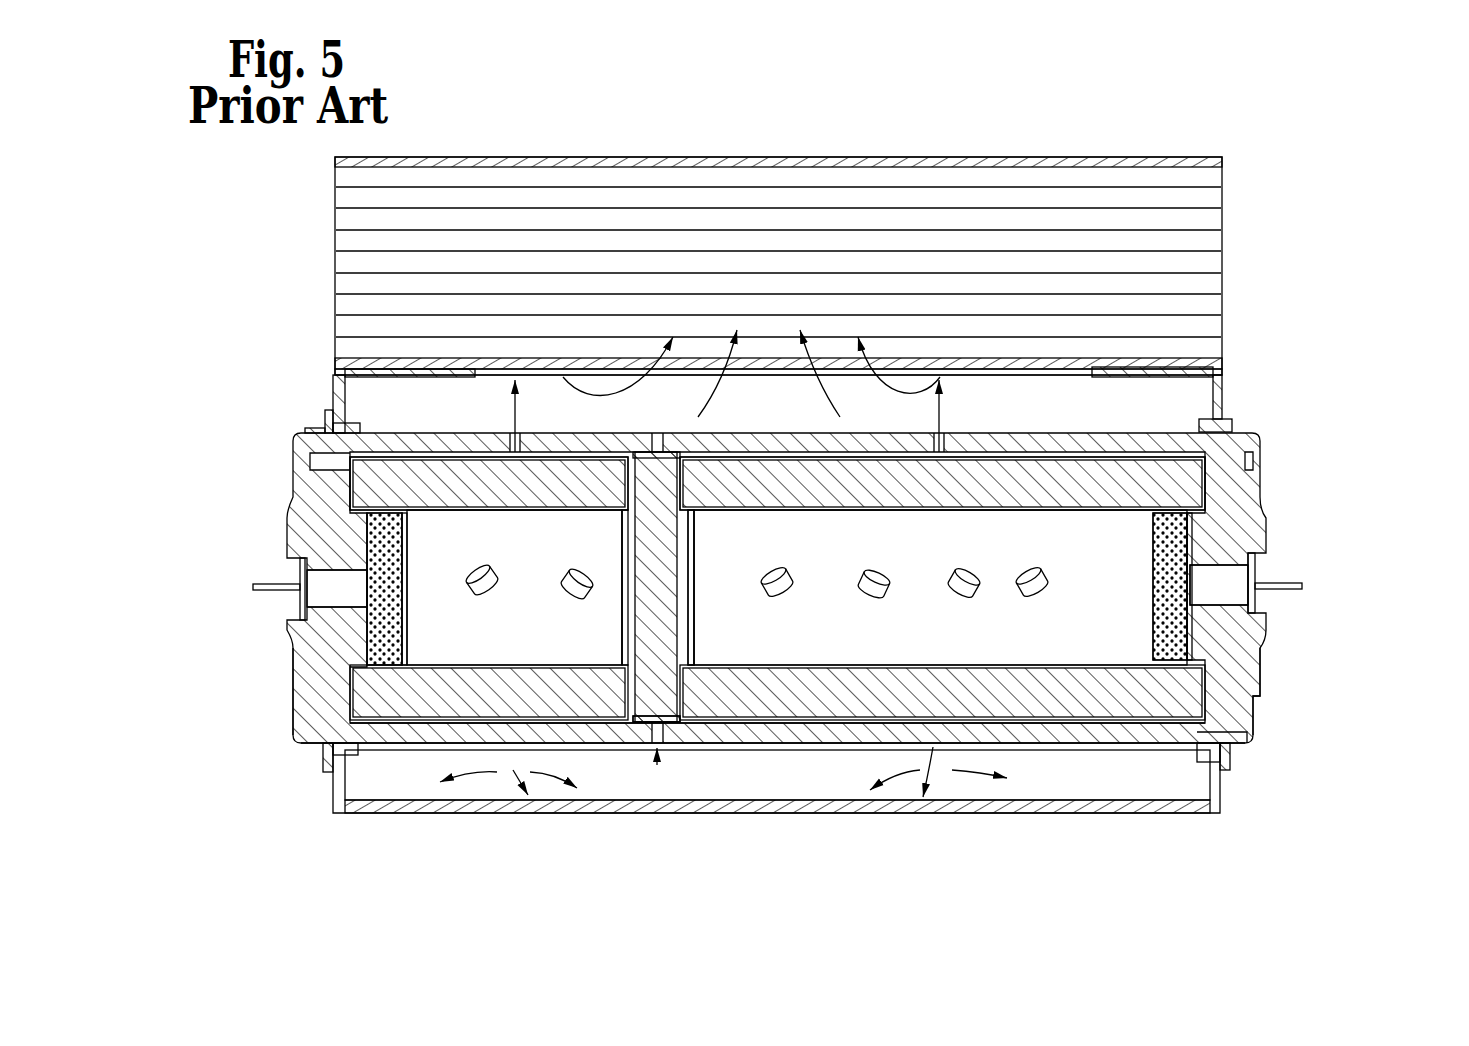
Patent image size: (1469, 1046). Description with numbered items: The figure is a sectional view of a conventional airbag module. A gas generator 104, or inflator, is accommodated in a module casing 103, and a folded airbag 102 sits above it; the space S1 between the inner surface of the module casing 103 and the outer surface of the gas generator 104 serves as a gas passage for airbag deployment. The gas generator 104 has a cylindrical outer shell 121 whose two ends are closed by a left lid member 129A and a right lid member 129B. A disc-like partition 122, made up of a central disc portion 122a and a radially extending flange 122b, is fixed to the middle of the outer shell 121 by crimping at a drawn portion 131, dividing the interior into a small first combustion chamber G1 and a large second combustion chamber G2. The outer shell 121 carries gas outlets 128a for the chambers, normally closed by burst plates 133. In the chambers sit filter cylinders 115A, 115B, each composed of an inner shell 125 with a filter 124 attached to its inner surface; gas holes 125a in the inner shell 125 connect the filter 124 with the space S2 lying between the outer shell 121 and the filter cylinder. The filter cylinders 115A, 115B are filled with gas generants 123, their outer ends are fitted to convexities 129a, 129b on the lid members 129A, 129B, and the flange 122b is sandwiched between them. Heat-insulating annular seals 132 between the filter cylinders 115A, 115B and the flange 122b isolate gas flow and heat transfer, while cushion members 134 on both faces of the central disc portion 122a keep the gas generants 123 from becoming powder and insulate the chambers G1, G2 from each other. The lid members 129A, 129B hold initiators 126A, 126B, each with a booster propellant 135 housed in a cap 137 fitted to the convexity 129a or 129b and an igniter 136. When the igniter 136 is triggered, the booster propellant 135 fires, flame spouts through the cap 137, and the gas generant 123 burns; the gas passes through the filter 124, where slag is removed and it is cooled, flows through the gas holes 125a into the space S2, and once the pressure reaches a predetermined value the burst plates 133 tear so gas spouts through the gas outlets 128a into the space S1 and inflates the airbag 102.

The airbag 102 is at (976, 230).
The module casing 103 is at (1226, 782).
The gas generator 104 is at (290, 449).
The filter cylinder 115A is at (194, 495).
The filter cylinder 115B is at (1373, 505).
The outer shell 121 is at (823, 750).
The partition 122 is at (630, 870).
The central disc portion 122a is at (633, 620).
The flange 122b is at (640, 722).
The gas generant 123 is at (568, 595).
The filter 124 is at (352, 498).
The inner shell 125 is at (350, 487).
The gas holes 125a is at (452, 660).
The initiator 126A is at (194, 698).
The initiator 126B is at (1373, 636).
The gas outlets 128a is at (510, 432).
The lid member 129A is at (307, 682).
The convexity 129a is at (307, 735).
The lid member 129B is at (1253, 692).
The convexity 129b is at (1222, 778).
The drawn portion 131 is at (668, 722).
The annular seals 132 is at (712, 745).
The burst plates 133 is at (578, 455).
The cushion members 134 is at (690, 625).
The booster propellant 135 is at (368, 620).
The igniter 136 is at (299, 588).
The cap 137 is at (334, 772).
The first combustion chamber G1 is at (427, 648).
The second combustion chamber G2 is at (1065, 645).
The space S1 is at (1177, 390).
The space S2 is at (1168, 433).